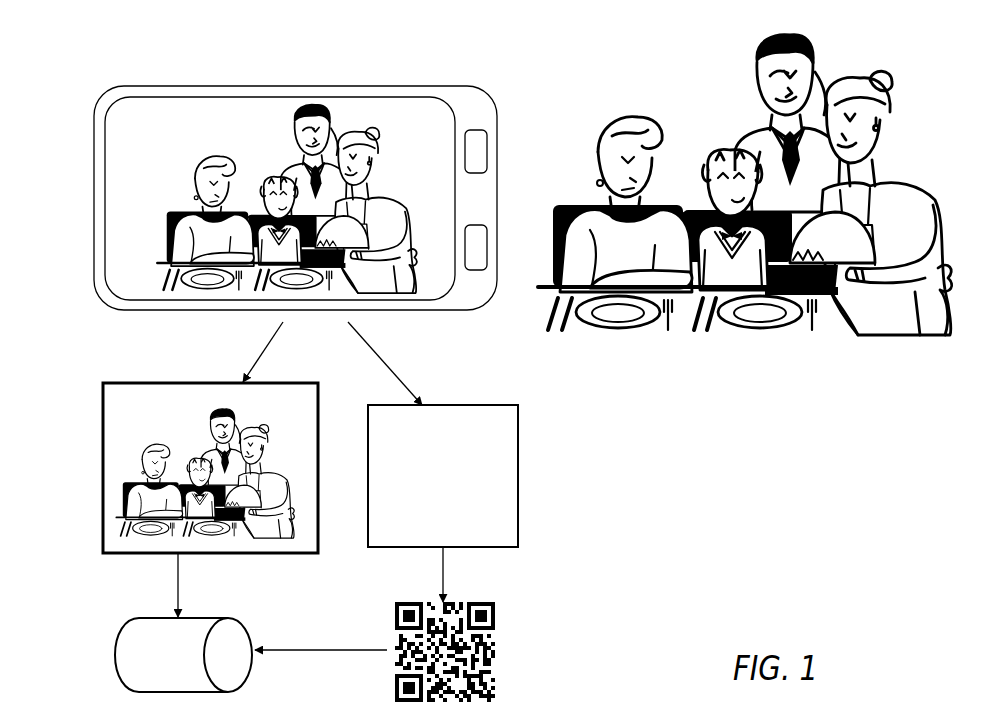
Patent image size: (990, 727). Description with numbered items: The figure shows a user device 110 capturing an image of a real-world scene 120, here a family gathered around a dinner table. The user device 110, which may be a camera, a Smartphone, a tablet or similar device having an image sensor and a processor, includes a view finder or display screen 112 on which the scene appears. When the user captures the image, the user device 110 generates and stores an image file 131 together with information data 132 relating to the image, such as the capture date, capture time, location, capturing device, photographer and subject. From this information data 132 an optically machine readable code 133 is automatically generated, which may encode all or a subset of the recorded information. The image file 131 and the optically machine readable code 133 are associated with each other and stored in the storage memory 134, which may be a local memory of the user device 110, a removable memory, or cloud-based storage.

The user device 110 is at (285, 186).
The display screen 112 is at (125, 172).
The real-world scene 120 is at (688, 66).
The image file 131 is at (103, 393).
The information data 132 is at (518, 428).
The optically machine readable code 133 is at (495, 640).
The storage memory 134 is at (240, 620).